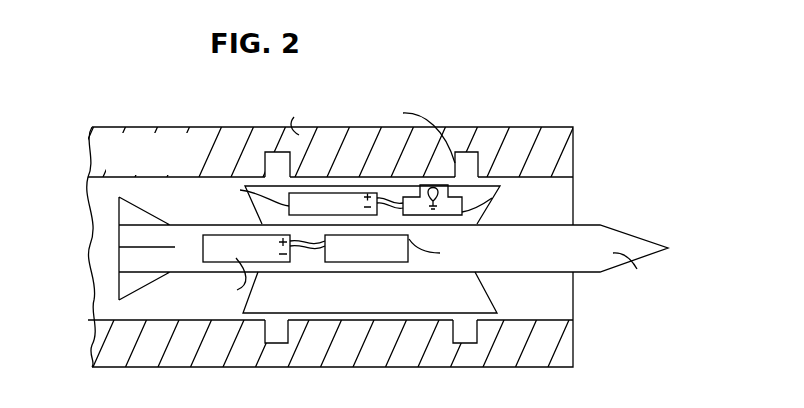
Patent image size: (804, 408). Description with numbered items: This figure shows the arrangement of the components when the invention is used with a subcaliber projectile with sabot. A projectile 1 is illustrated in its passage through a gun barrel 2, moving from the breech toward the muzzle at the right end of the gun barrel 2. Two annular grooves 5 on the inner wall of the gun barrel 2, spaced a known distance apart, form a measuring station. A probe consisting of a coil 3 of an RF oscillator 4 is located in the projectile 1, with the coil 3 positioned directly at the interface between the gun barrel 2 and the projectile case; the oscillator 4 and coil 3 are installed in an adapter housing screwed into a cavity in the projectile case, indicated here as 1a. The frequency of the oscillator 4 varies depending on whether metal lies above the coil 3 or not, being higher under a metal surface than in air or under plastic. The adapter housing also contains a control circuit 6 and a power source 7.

The projectile 1 is at (602, 243).
The projectile housing compartment 1a is at (477, 292).
The gun barrel 2 is at (560, 172).
The coil 3 is at (430, 189).
The RF oscillator 4 is at (530, 152).
The annular grooves 5 is at (278, 152).
The control circuit 6 is at (405, 264).
The power source 7 is at (329, 200).